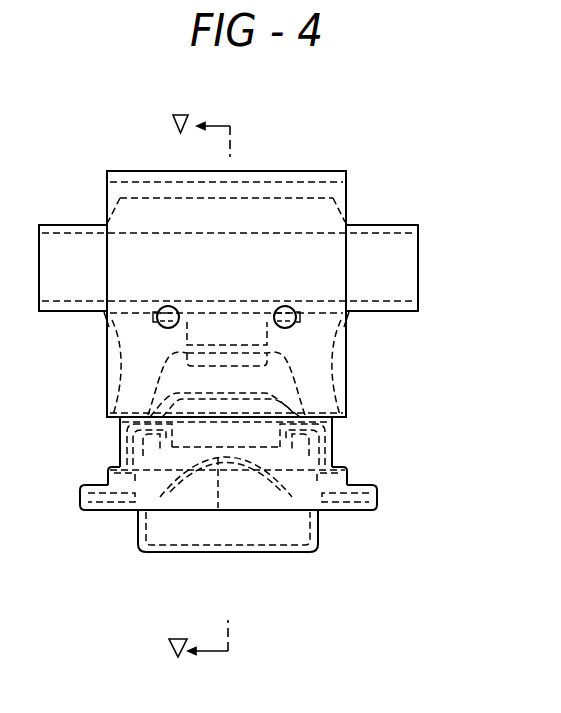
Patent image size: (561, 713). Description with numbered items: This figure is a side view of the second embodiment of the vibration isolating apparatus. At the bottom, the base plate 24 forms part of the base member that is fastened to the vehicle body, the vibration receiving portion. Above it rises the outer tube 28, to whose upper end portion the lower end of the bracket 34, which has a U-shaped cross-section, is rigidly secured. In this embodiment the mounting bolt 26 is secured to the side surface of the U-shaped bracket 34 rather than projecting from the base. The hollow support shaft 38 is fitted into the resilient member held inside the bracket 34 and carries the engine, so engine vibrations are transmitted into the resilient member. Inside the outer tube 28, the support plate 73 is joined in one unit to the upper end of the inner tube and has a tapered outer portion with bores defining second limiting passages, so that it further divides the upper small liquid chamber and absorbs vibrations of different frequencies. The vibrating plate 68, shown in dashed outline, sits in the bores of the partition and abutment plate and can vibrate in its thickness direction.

The base plate 24 is at (275, 553).
The mounting bolt 26 is at (170, 305).
The outer tube 28 is at (332, 442).
The bracket 34 is at (347, 197).
The support shaft 38 is at (408, 225).
The vibrating plate 68 is at (218, 508).
The support plate 73 is at (268, 388).